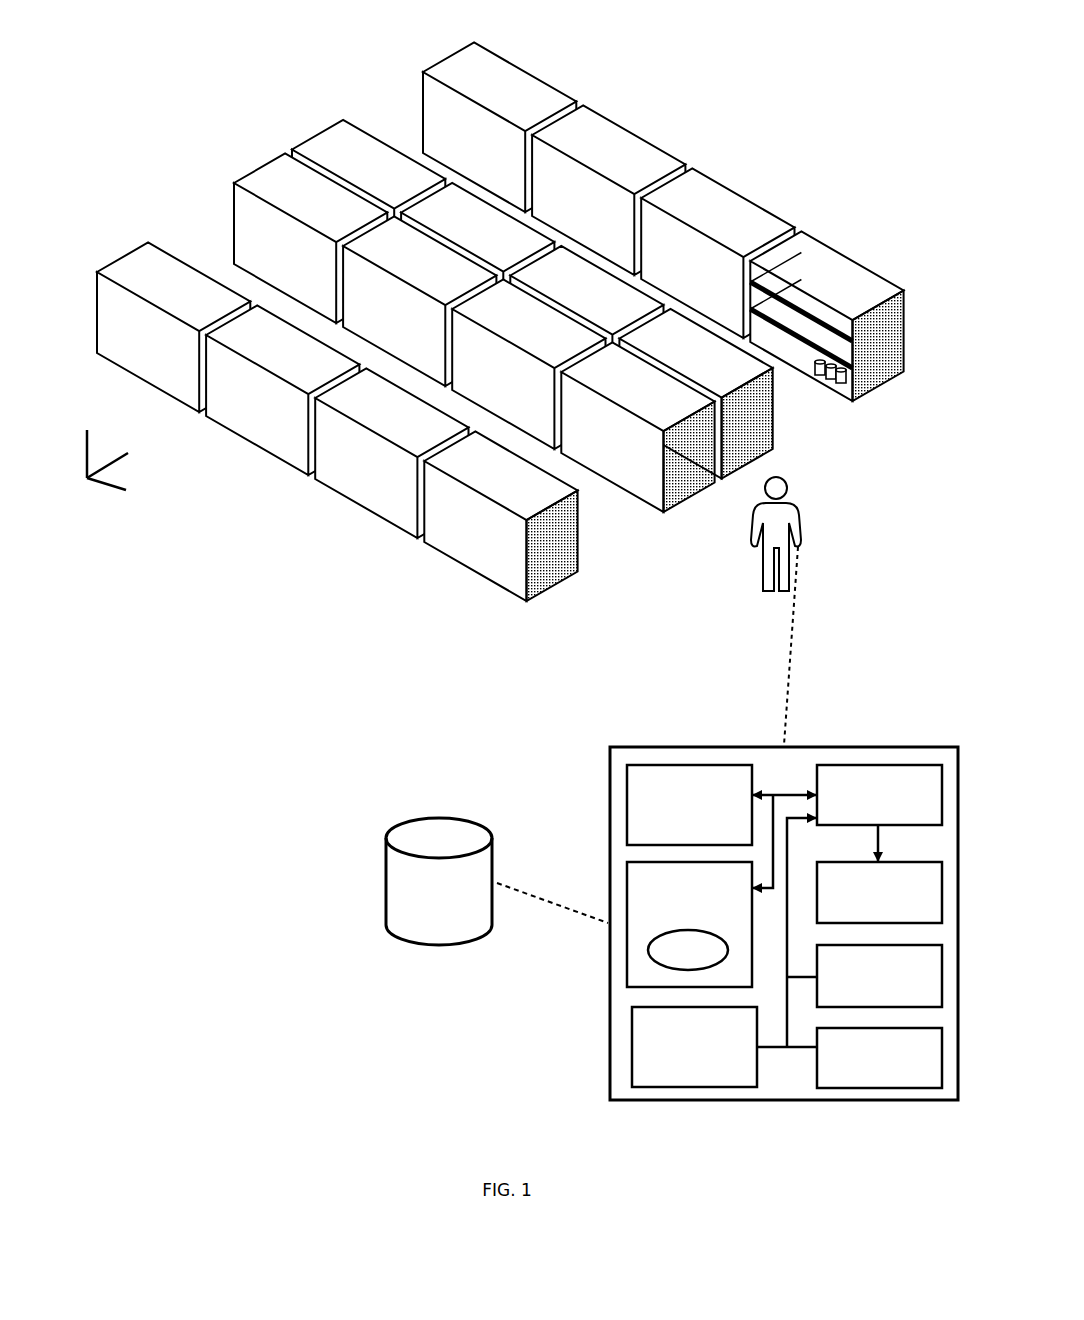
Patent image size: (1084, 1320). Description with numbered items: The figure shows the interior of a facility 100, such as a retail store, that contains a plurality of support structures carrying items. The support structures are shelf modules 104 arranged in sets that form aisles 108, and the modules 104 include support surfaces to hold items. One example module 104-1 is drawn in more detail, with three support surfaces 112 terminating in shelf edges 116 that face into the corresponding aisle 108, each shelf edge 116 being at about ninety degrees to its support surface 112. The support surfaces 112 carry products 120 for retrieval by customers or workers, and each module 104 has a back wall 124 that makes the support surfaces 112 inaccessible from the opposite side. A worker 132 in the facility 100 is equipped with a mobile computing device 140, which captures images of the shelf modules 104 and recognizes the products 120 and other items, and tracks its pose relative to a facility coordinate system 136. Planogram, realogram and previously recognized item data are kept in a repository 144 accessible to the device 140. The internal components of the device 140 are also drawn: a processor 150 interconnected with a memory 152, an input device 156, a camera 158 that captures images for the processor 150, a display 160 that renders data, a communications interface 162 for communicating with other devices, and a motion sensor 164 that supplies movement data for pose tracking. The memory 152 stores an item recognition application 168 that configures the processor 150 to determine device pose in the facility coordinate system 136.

The facility 100 is at (522, 333).
The shelf modules 104 is at (147, 253).
The example module 104-1 is at (852, 335).
The aisles 108 is at (593, 517).
The support surfaces 112 is at (777, 290).
The shelf edges 116 is at (815, 307).
The products 120 is at (838, 386).
The back wall 124 is at (463, 547).
The worker 132 is at (800, 520).
The facility coordinate system 136 is at (87, 482).
The mobile computing device 140 is at (784, 869).
The repository 144 is at (385, 880).
The processor 150 is at (879, 795).
The memory 152 is at (689, 924).
The input device 156 is at (879, 1058).
The camera 158 is at (879, 976).
The display 160 is at (879, 892).
The communications interface 162 is at (689, 805).
The motion sensor 164 is at (694, 1047).
The item recognition application 168 is at (688, 950).